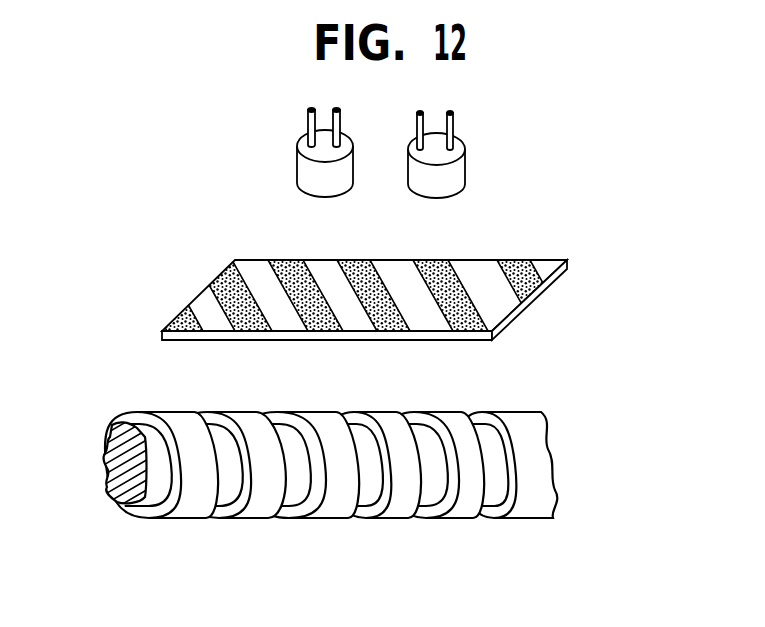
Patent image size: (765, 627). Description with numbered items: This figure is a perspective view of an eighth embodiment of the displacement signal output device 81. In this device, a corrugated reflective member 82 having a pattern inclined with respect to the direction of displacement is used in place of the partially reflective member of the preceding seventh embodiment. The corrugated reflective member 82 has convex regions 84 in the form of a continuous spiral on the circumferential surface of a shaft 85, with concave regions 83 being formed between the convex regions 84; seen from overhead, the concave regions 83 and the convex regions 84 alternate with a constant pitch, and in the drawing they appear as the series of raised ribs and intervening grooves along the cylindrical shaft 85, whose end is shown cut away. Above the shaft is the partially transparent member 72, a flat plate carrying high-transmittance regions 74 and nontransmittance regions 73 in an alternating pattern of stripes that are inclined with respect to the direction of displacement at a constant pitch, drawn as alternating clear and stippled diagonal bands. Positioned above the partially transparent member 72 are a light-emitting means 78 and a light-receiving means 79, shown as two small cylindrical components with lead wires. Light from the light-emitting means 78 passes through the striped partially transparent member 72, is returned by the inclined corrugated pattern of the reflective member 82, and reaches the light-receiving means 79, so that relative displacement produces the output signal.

The partially transparent member 72 is at (368, 275).
The nontransmittance regions 73 is at (350, 262).
The high-transmittance regions 74 is at (467, 262).
The light-emitting means 78 is at (305, 167).
The light-receiving means 79 is at (460, 165).
The displacement signal output device 81 is at (571, 215).
The corrugated reflective member 82 is at (342, 445).
The concave regions 83 is at (356, 425).
The convex regions 84 is at (457, 422).
The shaft 85 is at (145, 428).